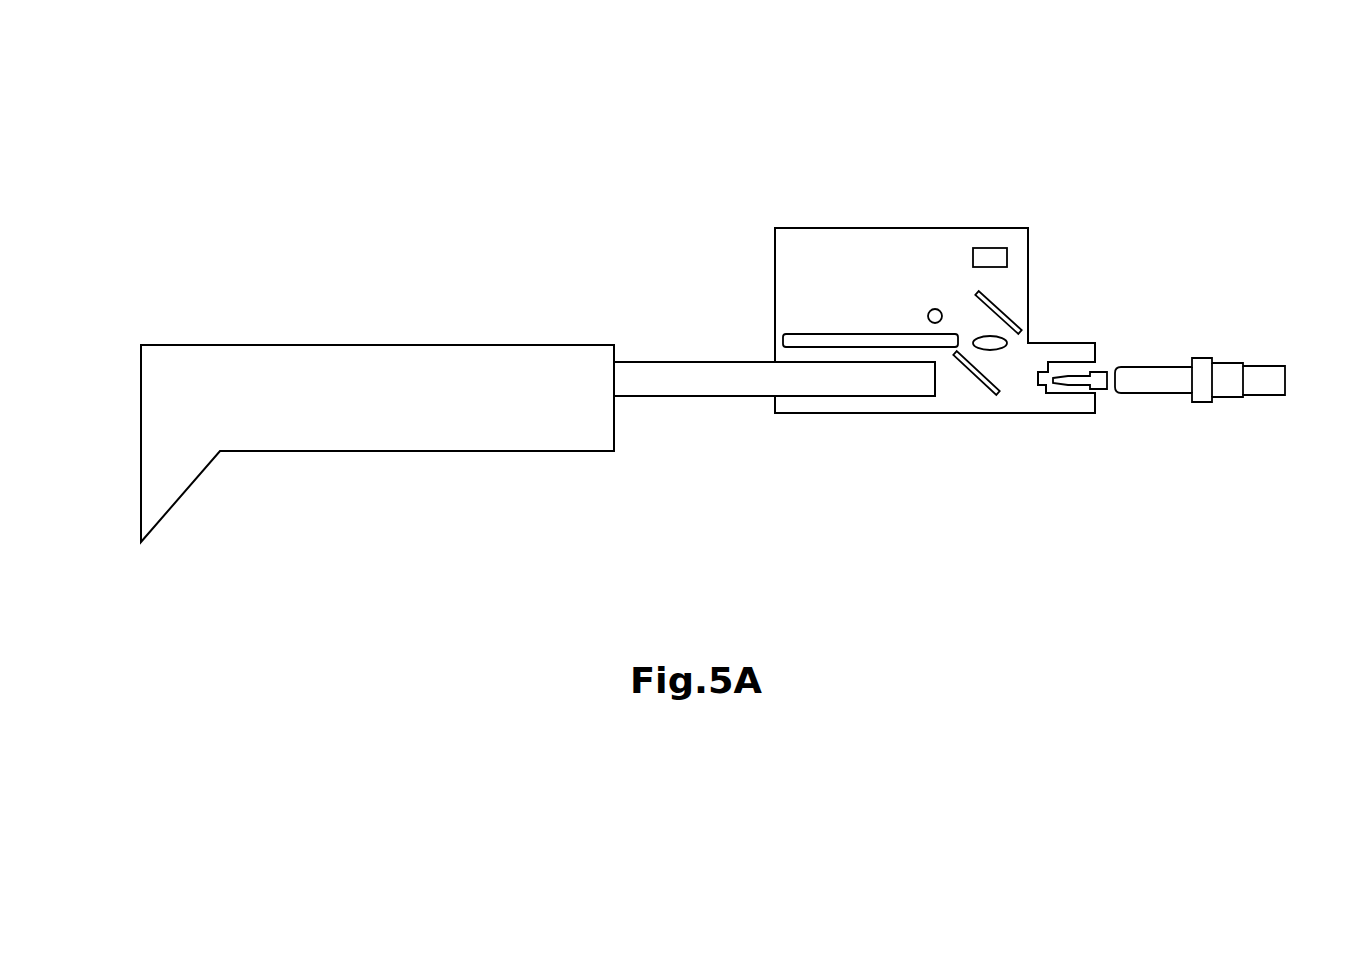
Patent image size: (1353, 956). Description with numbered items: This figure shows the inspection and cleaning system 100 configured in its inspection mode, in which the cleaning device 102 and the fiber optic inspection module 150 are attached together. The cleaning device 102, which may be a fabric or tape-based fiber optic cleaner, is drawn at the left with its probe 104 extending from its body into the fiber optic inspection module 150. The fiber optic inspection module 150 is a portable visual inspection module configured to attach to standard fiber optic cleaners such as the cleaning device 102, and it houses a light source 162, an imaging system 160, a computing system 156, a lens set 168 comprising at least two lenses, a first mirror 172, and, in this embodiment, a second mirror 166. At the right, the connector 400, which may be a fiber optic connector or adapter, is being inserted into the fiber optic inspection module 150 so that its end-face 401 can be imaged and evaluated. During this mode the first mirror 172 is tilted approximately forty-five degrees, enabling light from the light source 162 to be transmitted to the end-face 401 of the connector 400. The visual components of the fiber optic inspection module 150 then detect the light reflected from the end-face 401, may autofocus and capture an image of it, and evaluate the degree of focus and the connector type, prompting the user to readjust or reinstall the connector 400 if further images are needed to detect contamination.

The inspection and cleaning system 100 is at (1170, 160).
The cleaning device 102 is at (186, 372).
The probe 104 is at (721, 396).
The fiber optic inspection module 150 is at (798, 240).
The computing system 156 is at (786, 340).
The imaging system 160 is at (930, 310).
The light source 162 is at (990, 248).
The second mirror 166 is at (1002, 310).
The lens set 168 is at (998, 343).
The first mirror 172 is at (975, 377).
The connector 400 is at (1265, 395).
The end-face 401 is at (1050, 387).